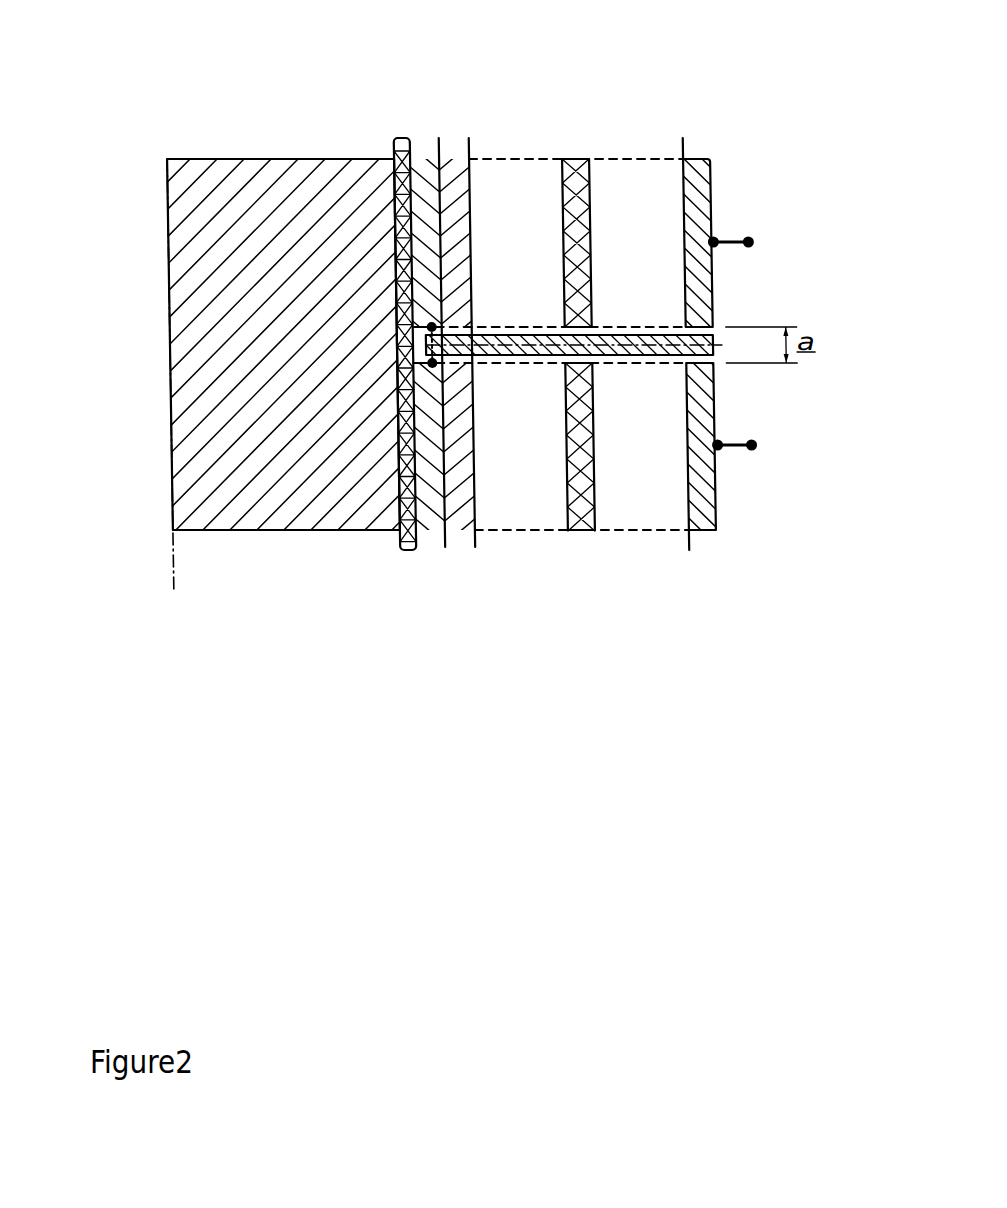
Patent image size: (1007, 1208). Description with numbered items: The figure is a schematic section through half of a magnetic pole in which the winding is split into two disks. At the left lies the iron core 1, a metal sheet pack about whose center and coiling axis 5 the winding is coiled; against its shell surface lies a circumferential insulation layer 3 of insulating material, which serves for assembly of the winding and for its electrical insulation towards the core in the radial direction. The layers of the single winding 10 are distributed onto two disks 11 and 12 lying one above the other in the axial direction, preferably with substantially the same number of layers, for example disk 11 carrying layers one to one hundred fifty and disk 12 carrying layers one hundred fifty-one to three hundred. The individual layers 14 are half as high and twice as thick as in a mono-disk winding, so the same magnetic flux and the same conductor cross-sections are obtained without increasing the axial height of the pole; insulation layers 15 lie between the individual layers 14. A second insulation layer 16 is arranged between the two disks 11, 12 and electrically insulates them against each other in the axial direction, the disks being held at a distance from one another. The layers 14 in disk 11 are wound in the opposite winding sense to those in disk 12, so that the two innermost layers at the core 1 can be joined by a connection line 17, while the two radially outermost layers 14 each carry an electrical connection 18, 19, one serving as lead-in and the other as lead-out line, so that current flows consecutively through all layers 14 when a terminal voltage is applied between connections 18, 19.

The iron core 1 is at (262, 190).
The insulation layer 3 is at (403, 152).
The center and coiling axis 5 is at (170, 207).
The winding 10 is at (606, 122).
The disk 11 is at (737, 176).
The disk 12 is at (740, 520).
The layers 14 is at (458, 158).
The insulation layers 15 is at (442, 547).
The second insulation layer 16 is at (634, 343).
The connection line 17 is at (432, 363).
The electrical connection 18 is at (750, 242).
The electrical connection 19 is at (750, 445).